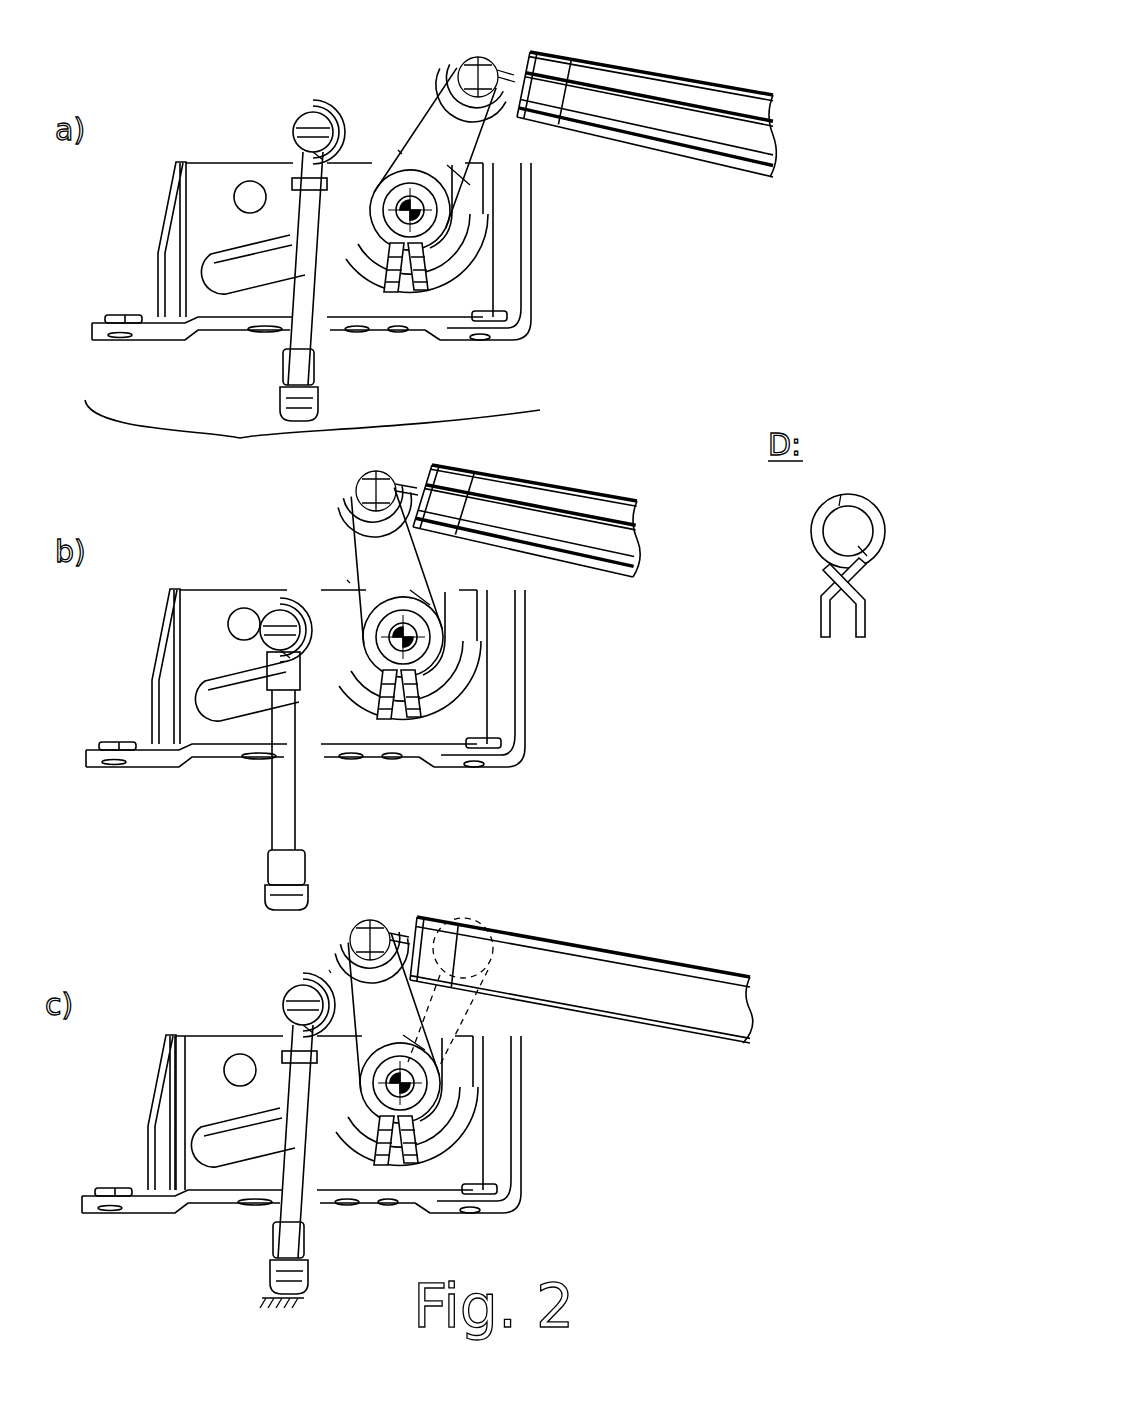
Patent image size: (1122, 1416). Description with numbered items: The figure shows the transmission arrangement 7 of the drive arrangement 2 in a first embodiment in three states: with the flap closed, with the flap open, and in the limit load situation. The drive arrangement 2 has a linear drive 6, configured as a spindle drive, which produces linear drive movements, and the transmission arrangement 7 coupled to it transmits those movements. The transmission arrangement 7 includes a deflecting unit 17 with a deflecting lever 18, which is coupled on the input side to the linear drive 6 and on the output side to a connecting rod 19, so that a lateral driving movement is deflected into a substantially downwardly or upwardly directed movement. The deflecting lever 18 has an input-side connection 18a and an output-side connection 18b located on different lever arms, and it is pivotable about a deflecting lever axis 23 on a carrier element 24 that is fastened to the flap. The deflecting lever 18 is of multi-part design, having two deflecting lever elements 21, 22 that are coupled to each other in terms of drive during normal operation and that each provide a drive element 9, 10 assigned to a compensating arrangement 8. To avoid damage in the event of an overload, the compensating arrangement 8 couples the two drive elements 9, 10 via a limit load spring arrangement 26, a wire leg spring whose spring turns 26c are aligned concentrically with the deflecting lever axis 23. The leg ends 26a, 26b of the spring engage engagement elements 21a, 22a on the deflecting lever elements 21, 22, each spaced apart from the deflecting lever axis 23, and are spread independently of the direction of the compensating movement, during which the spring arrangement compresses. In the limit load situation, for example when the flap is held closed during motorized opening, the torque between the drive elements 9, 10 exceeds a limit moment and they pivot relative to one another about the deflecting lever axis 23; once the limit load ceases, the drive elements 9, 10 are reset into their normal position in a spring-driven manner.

The drive arrangement 2 is at (730, 57).
The linear drive 6 is at (707, 137).
The transmission arrangement 7 is at (312, 434).
The compensating arrangement 8 is at (396, 145).
The drive element 9 is at (260, 531).
The drive element 10 is at (422, 579).
The deflecting unit 17 is at (552, 288).
The deflecting lever 18 is at (447, 165).
The input-side connection 18a is at (493, 57).
The output-side connection 18b is at (313, 137).
The connecting rod 19 is at (280, 333).
The deflecting lever element 21 is at (377, 160).
The engagement element 21a is at (448, 325).
The deflecting lever element 22 is at (430, 120).
The engagement element 22a is at (430, 245).
The deflecting lever axis 23 is at (327, 180).
The carrier element 24 is at (503, 290).
The limit load spring arrangement 26 is at (521, 729).
The leg end 26a is at (373, 307).
The leg end 26b is at (420, 280).
The spring turns 26c is at (423, 197).